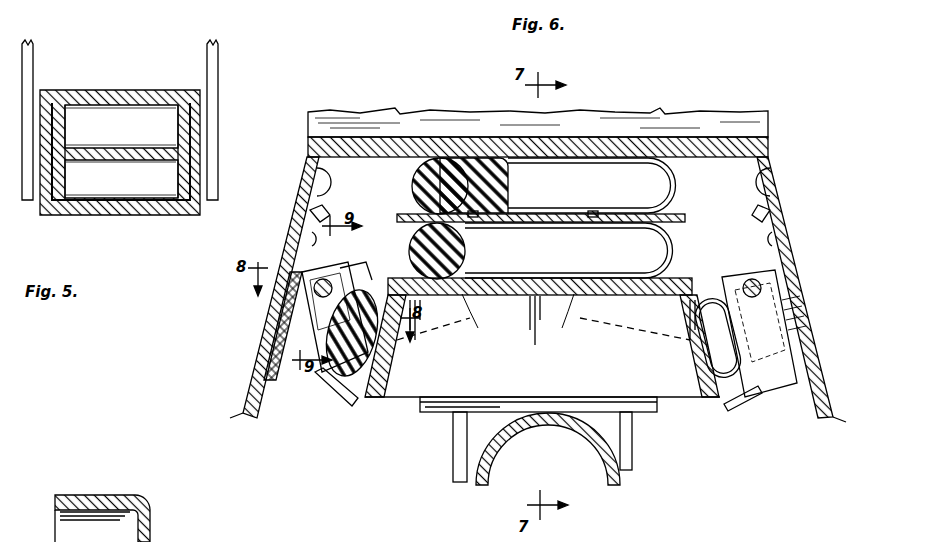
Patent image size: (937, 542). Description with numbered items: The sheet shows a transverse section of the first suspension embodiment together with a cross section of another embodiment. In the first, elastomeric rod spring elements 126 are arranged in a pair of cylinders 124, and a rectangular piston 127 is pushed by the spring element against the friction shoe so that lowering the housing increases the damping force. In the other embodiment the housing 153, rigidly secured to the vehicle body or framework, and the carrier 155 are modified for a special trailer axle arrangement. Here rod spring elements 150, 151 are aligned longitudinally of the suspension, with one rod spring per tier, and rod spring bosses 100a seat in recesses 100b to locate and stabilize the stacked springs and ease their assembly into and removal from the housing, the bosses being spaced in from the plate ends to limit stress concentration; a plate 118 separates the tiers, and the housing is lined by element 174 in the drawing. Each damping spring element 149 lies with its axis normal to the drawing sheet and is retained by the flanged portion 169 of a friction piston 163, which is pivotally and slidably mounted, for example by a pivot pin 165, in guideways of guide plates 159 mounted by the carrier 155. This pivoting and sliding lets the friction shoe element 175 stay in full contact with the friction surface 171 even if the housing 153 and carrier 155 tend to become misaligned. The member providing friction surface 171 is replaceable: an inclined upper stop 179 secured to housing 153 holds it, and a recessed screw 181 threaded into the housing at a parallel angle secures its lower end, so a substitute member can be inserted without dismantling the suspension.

In FIG. 6, the rod spring boss 100a is at (420, 196).
In FIG. 6, the recess 100b is at (604, 226).
In FIG. 6, the plate 118 is at (686, 218).
In FIG. 5, the cylinder 124 is at (80, 90).
In FIG. 5, the elastomeric rod spring element 126 is at (118, 145).
In FIG. 5, the rectangular piston 127 is at (145, 148).
In FIG. 6, the damping spring element 149 is at (382, 352).
In FIG. 6, the rod spring element 150 is at (677, 186).
In FIG. 6, the rod spring element 151 is at (674, 246).
In FIG. 6, the housing 153 is at (652, 148).
In FIG. 6, the carrier 155 is at (542, 337).
In FIG. 6, the guide plate 159 is at (372, 276).
In FIG. 6, the friction piston 163 is at (292, 370).
In FIG. 6, the pivot pin 165 is at (293, 290).
In FIG. 6, the flanged portion 169 is at (346, 406).
In FIG. 6, the friction surface 171 is at (303, 232).
In FIG. 6, the liner 174 is at (284, 326).
In FIG. 6, the friction shoe element 175 is at (797, 322).
In FIG. 6, the upper stop 179 is at (312, 168).
In FIG. 6, the recessed screw 181 is at (257, 418).